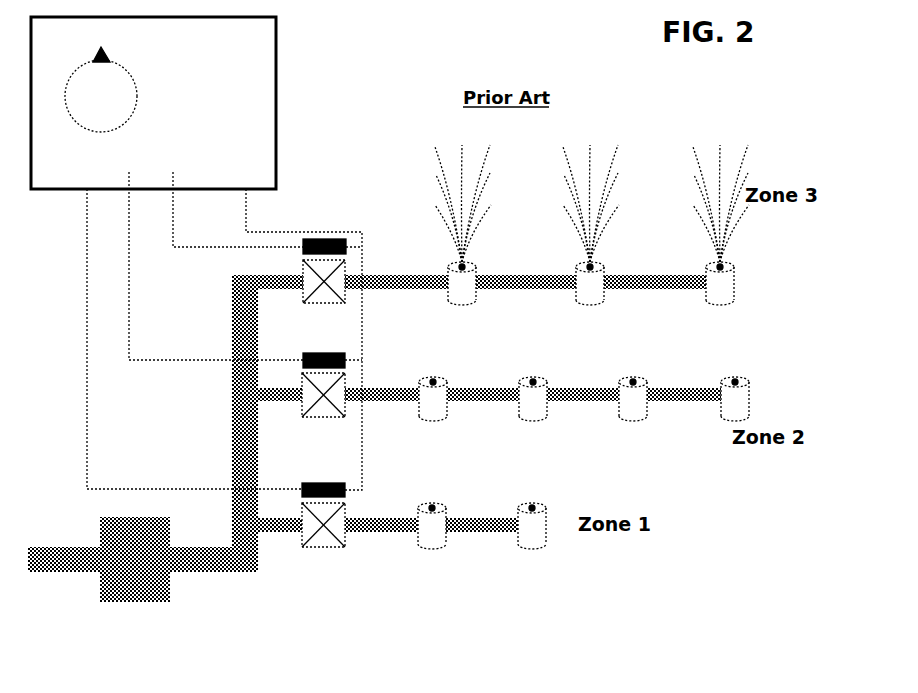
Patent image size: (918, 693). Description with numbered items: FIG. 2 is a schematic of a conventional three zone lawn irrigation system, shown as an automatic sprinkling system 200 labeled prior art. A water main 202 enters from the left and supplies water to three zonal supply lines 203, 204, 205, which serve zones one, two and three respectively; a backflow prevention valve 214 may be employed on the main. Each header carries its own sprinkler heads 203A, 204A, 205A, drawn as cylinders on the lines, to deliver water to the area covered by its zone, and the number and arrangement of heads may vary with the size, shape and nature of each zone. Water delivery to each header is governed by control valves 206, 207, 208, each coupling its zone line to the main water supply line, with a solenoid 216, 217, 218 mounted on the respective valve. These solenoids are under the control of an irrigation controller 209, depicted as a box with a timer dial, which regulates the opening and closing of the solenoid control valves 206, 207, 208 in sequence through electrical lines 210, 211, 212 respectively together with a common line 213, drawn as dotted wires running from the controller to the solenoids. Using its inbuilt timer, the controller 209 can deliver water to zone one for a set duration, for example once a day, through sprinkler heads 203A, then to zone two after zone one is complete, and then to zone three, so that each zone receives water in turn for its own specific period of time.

The automatic sprinkling system 200 is at (732, 103).
The water main 202 is at (52, 545).
The zonal supply line 203 is at (475, 533).
The sprinkler heads 203A is at (437, 503).
The zonal supply line 204 is at (490, 405).
The sprinkler heads 204A is at (448, 380).
The zonal supply line 205 is at (548, 288).
The sprinkler heads 205A is at (468, 263).
The control valve 206 is at (333, 547).
The control valve 207 is at (345, 418).
The control valve 208 is at (338, 305).
The irrigation controller 209 is at (280, 108).
The electrical line 210 is at (87, 189).
The electrical line 211 is at (233, 258).
The electrical line 212 is at (255, 202).
The common line 213 is at (240, 188).
The backflow prevention valve 214 is at (153, 602).
The solenoid 216 is at (347, 482).
The solenoid 217 is at (347, 353).
The solenoid 218 is at (338, 238).